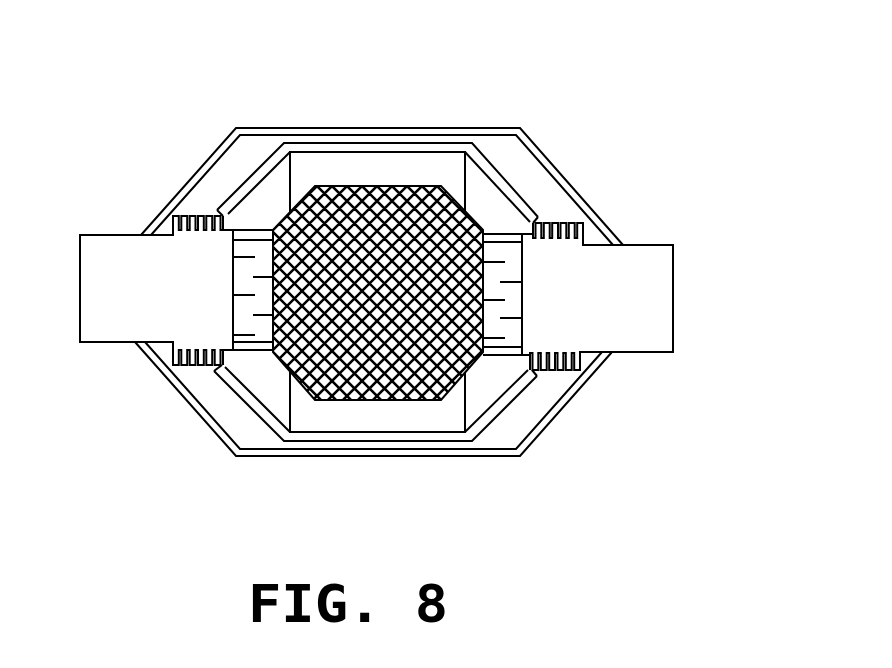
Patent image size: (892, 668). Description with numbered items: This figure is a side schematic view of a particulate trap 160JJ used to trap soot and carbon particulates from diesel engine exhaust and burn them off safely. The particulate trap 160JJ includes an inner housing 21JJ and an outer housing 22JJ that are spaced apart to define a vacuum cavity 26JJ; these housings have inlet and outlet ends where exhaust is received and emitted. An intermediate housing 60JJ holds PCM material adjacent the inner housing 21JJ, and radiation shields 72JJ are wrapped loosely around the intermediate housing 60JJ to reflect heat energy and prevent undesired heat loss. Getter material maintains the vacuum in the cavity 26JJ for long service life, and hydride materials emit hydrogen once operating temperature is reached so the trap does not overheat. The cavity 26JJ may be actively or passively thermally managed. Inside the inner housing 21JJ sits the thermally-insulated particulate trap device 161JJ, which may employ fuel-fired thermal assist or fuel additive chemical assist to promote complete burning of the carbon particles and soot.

The particulate trap 160JJ is at (652, 192).
The outer housing 22JJ is at (345, 458).
The vacuum cavity 26JJ is at (223, 417).
The intermediate housing 60JJ is at (372, 150).
The radiation shields 72JJ is at (438, 140).
The inner housing 21JJ is at (347, 185).
The thermally-insulated particulate trap device 161JJ is at (438, 375).